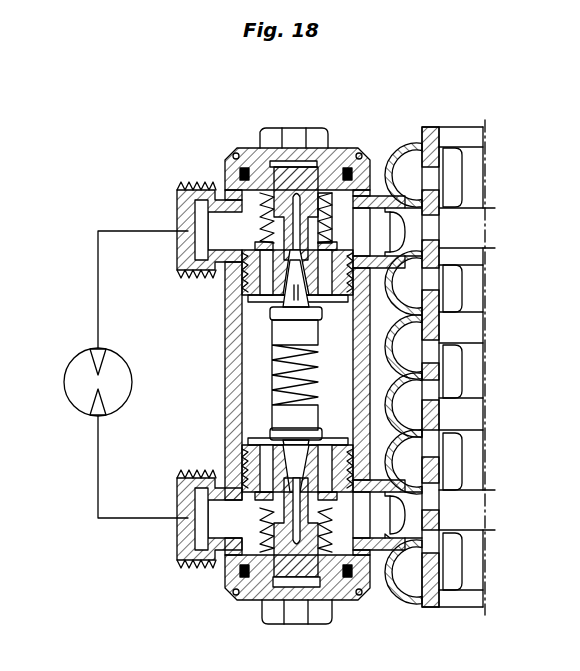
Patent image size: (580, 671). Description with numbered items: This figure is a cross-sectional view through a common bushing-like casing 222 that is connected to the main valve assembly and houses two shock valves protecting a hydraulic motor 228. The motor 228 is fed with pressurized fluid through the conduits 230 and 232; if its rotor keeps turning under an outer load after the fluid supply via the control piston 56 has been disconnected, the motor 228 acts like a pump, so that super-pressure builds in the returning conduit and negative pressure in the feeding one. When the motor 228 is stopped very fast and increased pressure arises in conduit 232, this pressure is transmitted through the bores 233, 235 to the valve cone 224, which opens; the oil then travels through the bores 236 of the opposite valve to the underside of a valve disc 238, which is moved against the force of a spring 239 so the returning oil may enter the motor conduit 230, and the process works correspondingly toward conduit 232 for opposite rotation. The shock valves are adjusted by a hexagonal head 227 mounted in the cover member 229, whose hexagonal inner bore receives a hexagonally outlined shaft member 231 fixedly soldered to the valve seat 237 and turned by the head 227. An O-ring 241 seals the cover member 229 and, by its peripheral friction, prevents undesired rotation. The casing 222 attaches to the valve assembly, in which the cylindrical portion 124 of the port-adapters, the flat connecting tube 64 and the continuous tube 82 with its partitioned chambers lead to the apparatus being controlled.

The control piston 56 is at (470, 422).
The connecting tube 64 is at (405, 235).
The continuous tube 82 is at (410, 510).
The cylindrical portion 124 is at (373, 228).
The bushing-like casing 222 is at (232, 360).
The valve cone 224 is at (292, 303).
The hexagonal head 227 is at (297, 130).
The hydraulic motor 228 is at (80, 377).
The cover member 229 is at (332, 160).
The conduit 230 is at (98, 492).
The shaft member 231 is at (283, 182).
The conduit 232 is at (138, 226).
The bore 233 is at (340, 205).
The bore 235 is at (285, 222).
The bore 236 is at (242, 455).
The valve seat 237 is at (253, 268).
The valve disc 238 is at (258, 498).
The spring 239 is at (238, 557).
The O-ring 241 is at (240, 170).